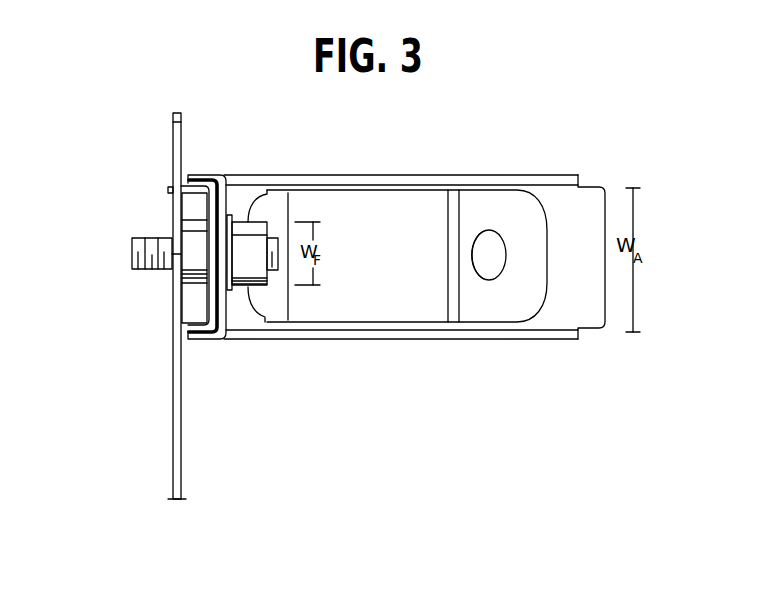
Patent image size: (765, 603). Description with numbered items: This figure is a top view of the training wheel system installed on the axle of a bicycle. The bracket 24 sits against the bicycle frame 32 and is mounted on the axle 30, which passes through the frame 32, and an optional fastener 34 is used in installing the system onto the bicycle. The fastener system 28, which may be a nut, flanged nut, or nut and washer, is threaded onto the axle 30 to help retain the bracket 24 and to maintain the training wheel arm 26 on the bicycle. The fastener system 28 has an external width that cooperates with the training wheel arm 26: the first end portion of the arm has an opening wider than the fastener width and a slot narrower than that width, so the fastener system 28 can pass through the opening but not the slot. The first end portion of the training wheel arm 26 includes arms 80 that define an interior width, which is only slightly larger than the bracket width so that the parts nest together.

The bracket 24 is at (195, 192).
The training wheel arm 26 is at (254, 175).
The fastener system 28 is at (256, 268).
The axle 30 is at (148, 237).
The frame 32 is at (172, 133).
The fastener 34 is at (195, 288).
The arms 80 is at (207, 180).